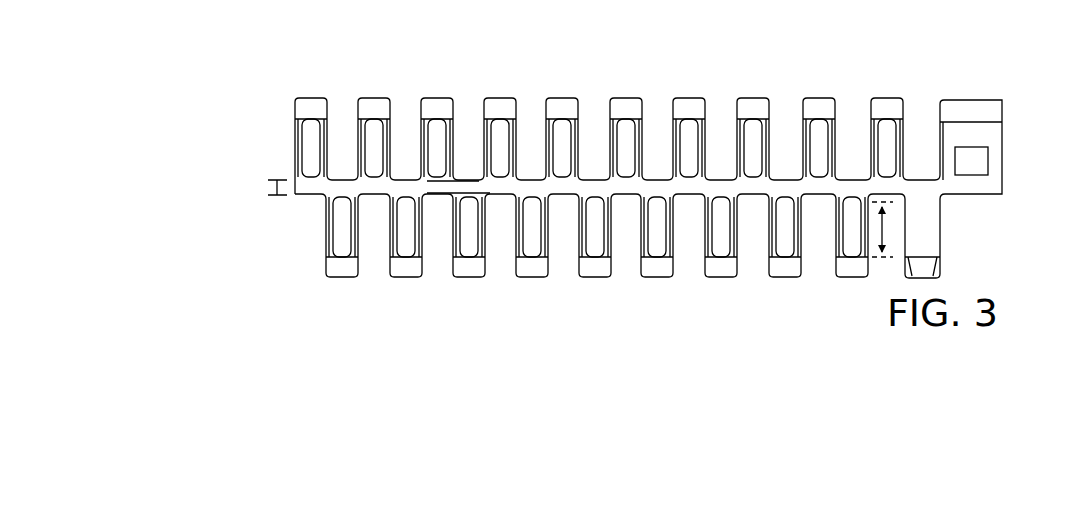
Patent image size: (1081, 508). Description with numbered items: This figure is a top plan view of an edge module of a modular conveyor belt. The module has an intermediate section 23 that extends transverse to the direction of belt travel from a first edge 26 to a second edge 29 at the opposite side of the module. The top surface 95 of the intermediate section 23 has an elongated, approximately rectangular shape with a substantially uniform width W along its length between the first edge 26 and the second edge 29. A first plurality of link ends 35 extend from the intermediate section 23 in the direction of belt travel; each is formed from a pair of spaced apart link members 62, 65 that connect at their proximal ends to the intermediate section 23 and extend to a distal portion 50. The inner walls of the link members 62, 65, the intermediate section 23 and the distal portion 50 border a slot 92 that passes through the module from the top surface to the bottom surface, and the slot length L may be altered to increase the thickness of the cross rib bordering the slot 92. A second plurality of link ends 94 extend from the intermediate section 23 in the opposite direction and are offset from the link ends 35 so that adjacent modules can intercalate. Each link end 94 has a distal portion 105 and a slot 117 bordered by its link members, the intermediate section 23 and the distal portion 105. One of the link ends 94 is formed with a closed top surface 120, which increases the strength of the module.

The intermediate section 23 is at (388, 183).
The first edge 26 is at (1003, 182).
The second edge 29 is at (295, 197).
The first plurality of link ends 35 is at (500, 98).
The distal portion 50 is at (751, 100).
The link member 62 is at (729, 90).
The link member 65 is at (897, 0).
The slot 92 is at (562, 139).
The second plurality of link ends 94 is at (530, 268).
The top surface 95 is at (458, 186).
The distal portion 105 is at (785, 280).
The slot 117 is at (656, 242).
The closed top surface 120 is at (920, 233).
The width W is at (268, 182).
The slot length L is at (893, 227).